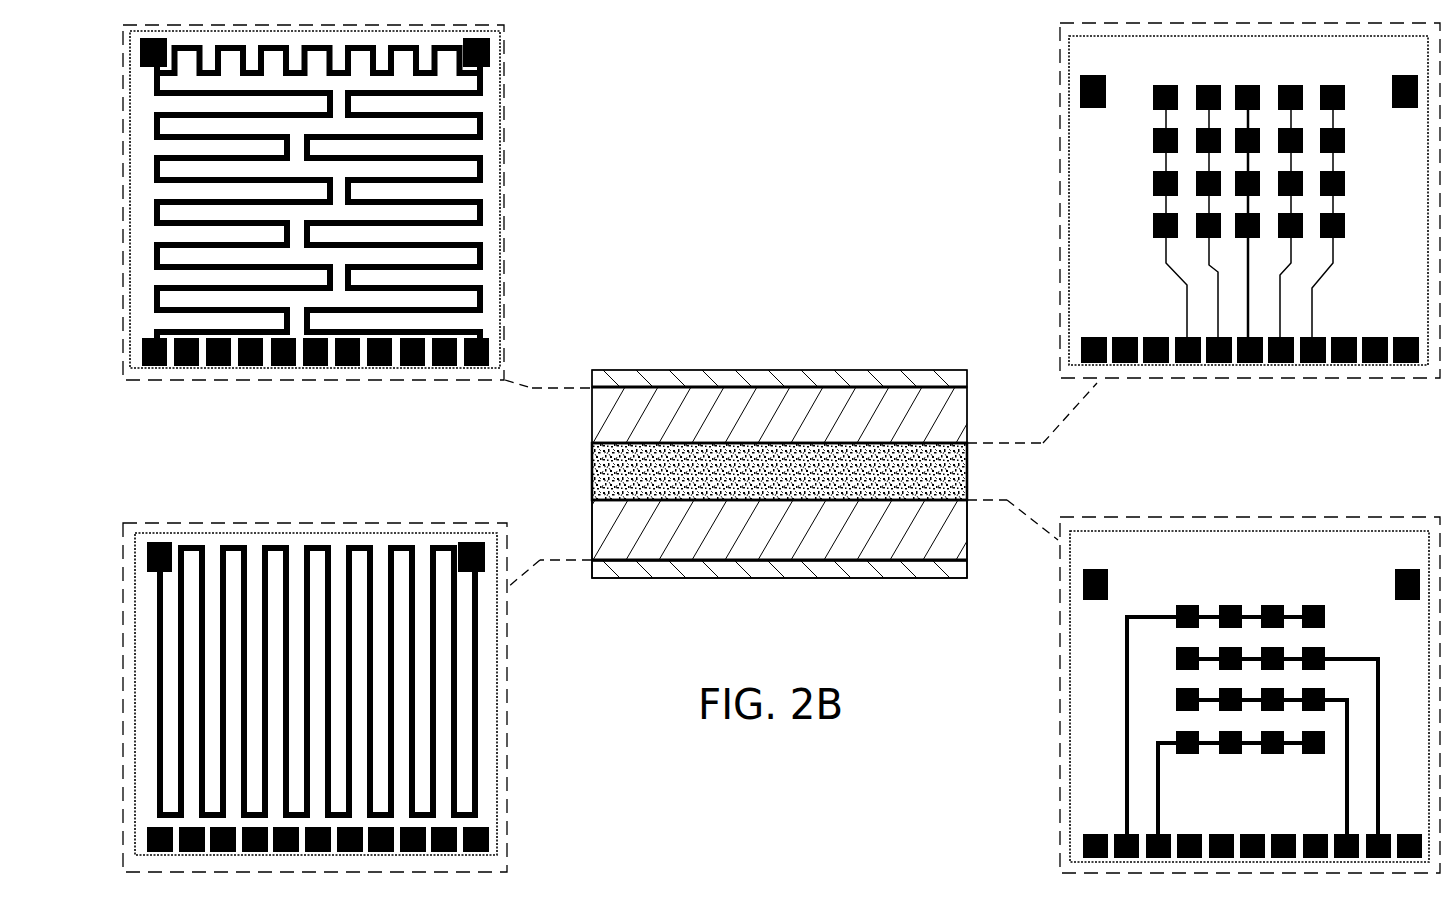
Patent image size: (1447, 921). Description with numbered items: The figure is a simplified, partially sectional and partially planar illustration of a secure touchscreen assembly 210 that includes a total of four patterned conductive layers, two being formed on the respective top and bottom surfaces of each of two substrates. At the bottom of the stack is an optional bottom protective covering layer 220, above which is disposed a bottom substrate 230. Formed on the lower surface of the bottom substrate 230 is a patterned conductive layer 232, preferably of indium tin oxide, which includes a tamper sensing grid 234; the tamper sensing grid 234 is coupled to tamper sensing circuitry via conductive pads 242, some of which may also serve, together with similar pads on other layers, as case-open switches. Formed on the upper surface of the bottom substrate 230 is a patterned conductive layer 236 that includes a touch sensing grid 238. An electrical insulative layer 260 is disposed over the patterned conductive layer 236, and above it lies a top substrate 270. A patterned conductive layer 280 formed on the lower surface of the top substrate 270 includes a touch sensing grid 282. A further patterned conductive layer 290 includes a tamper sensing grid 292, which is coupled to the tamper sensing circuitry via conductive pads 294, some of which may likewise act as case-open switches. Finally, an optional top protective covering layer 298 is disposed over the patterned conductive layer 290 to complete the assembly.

The secure touchscreen assembly 210 is at (900, 353).
The bottom protective covering layer 220 is at (968, 575).
The bottom substrate 230 is at (968, 520).
The patterned conductive layer 232 is at (968, 560).
The tamper sensing grid 234 is at (476, 714).
The patterned conductive layer 236 is at (592, 500).
The touch sensing grid 238 is at (1360, 657).
The conductive pads 242 is at (147, 553).
The electrical insulative layer 260 is at (968, 472).
The top substrate 270 is at (592, 402).
The patterned conductive layer 280 is at (592, 443).
The touch sensing grid 282 is at (1160, 160).
The patterned conductive layer 290 is at (967, 387).
The tamper sensing grid 292 is at (484, 157).
The conductive pads 294 is at (155, 368).
The top protective covering layer 298 is at (967, 376).